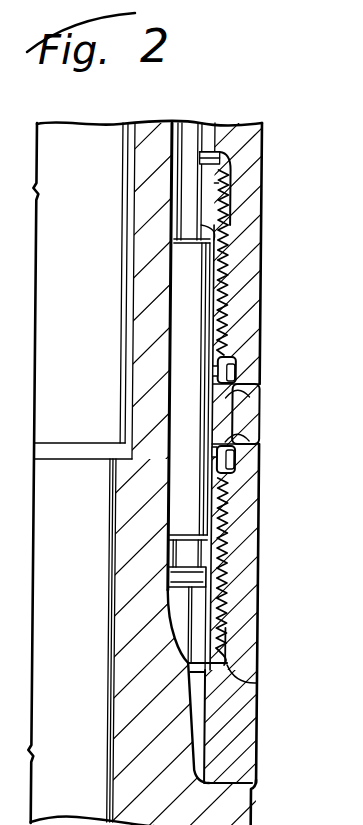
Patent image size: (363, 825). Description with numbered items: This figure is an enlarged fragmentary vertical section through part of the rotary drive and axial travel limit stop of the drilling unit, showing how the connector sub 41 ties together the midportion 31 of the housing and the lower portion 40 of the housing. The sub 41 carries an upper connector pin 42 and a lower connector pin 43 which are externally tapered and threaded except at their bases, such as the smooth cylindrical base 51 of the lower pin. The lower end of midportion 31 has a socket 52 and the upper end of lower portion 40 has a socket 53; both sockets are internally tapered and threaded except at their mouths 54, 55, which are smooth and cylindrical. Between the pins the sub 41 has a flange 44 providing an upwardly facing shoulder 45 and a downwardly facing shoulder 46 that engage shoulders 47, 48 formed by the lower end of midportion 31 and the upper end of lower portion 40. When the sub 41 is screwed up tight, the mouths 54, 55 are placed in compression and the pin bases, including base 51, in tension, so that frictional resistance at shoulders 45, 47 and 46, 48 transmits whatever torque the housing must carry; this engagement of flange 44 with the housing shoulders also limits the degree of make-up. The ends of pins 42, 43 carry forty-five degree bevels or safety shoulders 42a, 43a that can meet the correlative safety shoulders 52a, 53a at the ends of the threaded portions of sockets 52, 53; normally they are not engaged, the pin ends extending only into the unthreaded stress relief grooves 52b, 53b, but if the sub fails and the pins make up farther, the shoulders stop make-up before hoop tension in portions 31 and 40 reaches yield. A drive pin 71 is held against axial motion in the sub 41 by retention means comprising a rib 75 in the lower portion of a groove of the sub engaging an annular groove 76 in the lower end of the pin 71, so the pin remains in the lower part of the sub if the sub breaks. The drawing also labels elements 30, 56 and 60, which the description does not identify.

The tubular member 30 is at (167, 705).
The midportion of the housing 31 is at (232, 128).
The lower portion of the housing 40 is at (240, 736).
The connector sub 41 is at (262, 465).
The upper connector pin 42 is at (220, 255).
The safety shoulder of upper pin 42a is at (218, 177).
The lower connector pin 43 is at (232, 626).
The safety shoulder of lower pin 43a is at (205, 667).
The flange 44 is at (258, 412).
The upwardly facing shoulder 45 is at (261, 386).
The downwardly facing shoulder 46 is at (250, 441).
The housing midportion shoulder 47 is at (238, 370).
The lower housing portion shoulder 48 is at (238, 461).
The pin base 51 is at (222, 452).
The upper socket 52 is at (230, 274).
The upper socket safety shoulder 52a is at (224, 162).
The upper stress relief groove 52b is at (236, 182).
The lower socket 53 is at (214, 566).
The lower socket safety shoulder 53a is at (242, 686).
The lower stress relief groove 53b is at (235, 647).
The upper socket mouth 54 is at (240, 368).
The lower socket mouth 55 is at (238, 470).
The upper lug 56 is at (220, 372).
The seal ring 60 is at (209, 152).
The pin 71 is at (182, 308).
The rib 75 is at (212, 585).
The annular groove 76 is at (177, 554).